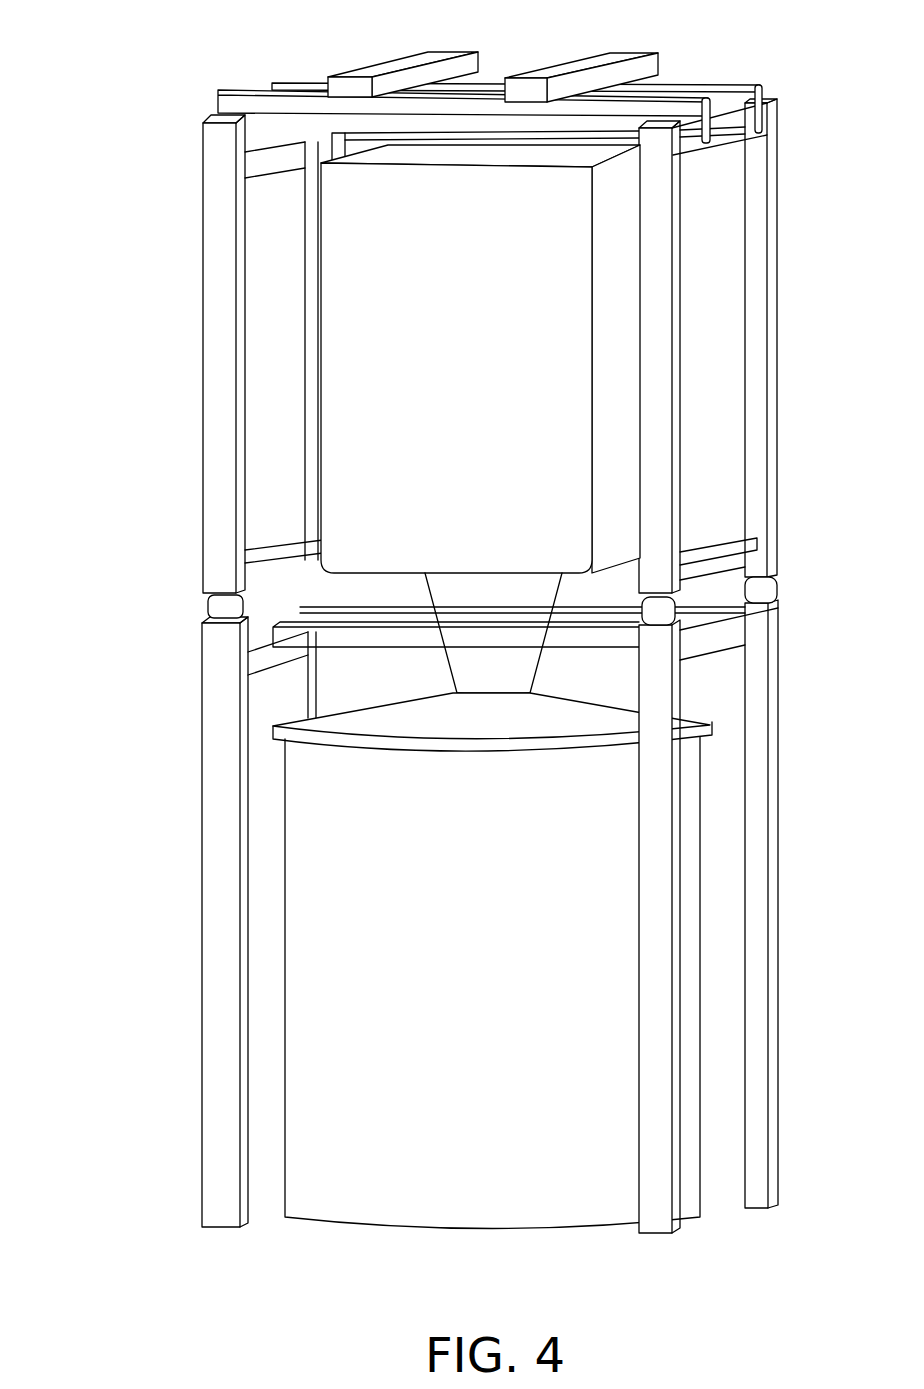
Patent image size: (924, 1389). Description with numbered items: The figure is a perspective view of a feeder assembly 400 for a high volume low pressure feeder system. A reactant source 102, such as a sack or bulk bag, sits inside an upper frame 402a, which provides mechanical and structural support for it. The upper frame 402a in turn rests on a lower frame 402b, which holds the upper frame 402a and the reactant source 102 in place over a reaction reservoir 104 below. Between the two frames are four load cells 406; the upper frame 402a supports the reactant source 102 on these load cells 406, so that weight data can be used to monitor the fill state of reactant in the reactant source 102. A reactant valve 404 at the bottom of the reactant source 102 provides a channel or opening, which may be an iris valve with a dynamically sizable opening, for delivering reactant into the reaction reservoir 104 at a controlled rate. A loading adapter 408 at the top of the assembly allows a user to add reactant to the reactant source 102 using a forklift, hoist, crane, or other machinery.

The feeder assembly 400 is at (100, 55).
The reactant source 102 is at (454, 308).
The reaction reservoir 104 is at (425, 905).
The upper frame 402a is at (218, 362).
The lower frame 402b is at (218, 965).
The reactant valve 404 is at (462, 683).
The load cells 406 is at (208, 610).
The loading adapter 408 is at (584, 63).